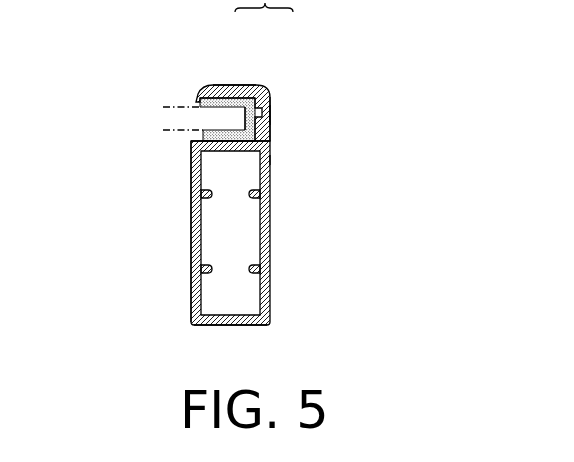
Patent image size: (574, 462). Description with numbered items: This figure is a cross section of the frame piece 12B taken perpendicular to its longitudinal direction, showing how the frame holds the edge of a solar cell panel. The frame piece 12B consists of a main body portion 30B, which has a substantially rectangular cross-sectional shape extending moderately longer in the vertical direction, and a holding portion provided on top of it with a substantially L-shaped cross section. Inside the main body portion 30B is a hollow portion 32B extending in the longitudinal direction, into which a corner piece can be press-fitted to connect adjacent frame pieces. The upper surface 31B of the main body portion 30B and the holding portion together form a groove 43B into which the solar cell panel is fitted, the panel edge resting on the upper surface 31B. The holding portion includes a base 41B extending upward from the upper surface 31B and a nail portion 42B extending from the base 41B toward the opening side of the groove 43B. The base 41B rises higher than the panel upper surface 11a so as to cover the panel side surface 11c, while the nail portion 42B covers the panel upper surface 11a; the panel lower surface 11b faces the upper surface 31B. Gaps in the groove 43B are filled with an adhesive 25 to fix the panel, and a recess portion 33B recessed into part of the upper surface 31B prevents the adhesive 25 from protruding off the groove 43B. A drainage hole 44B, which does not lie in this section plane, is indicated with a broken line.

The frame piece 12B is at (272, 228).
The main body portion 30B is at (191, 225).
The upper surface 31B is at (191, 141).
The hollow portion 32B is at (260, 283).
The base 41B is at (272, 96).
The nail portion 42B is at (241, 85).
The groove 43B is at (197, 97).
The drainage hole 44B is at (270, 130).
The recess portion 33B is at (243, 130).
The adhesive 25 is at (270, 115).
The panel upper surface 11a is at (170, 106).
The panel lower surface 11b is at (170, 129).
The panel side surface 11c is at (270, 160).